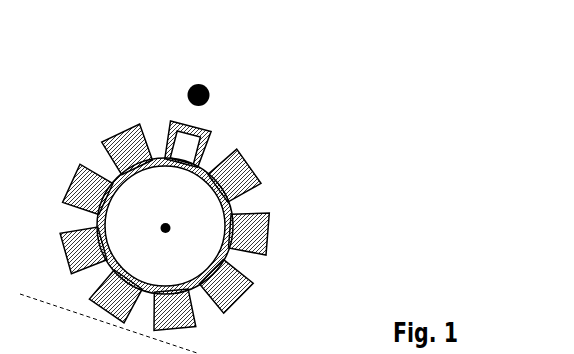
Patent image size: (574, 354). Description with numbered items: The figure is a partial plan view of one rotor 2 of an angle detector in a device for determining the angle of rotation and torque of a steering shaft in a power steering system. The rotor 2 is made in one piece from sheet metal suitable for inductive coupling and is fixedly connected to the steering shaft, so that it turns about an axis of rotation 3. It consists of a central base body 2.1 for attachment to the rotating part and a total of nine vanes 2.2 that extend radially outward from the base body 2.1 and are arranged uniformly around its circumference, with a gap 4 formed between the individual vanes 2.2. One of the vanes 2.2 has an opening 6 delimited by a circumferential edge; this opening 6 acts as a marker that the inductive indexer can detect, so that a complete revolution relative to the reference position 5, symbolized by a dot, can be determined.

The rotor 2 is at (303, 225).
The base body 2.1 is at (233, 207).
The vanes 2.2 is at (235, 173).
The axis of rotation 3 is at (165, 226).
The gap 4 is at (248, 268).
The reference position 5 is at (209, 96).
The opening 6 is at (179, 147).